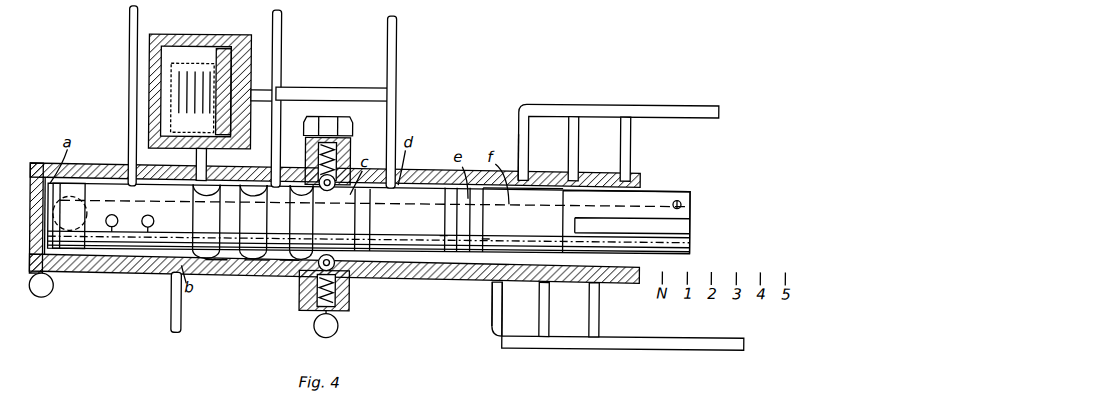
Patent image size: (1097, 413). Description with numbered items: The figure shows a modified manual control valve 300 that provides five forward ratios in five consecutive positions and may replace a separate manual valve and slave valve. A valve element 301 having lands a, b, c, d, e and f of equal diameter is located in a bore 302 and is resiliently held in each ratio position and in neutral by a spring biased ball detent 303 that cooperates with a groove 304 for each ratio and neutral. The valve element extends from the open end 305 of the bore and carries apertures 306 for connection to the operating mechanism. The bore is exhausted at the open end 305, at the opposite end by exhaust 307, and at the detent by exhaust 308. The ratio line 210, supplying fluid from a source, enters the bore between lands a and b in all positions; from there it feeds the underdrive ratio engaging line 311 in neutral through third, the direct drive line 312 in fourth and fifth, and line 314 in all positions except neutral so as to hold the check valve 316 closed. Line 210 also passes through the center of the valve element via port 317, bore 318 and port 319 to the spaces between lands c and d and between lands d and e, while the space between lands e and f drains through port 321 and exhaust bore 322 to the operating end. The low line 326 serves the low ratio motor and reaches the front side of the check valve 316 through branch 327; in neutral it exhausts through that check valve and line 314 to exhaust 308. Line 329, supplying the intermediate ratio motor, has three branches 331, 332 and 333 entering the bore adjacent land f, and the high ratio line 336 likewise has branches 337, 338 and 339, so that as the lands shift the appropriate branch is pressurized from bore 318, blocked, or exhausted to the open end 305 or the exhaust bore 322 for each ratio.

The modified control valve 300 is at (108, 165).
The valve element 301 is at (428, 210).
The bore 302 is at (290, 262).
The spring biased ball detent 303 is at (258, 258).
The groove 304 is at (215, 258).
The open end of the bore 305 is at (657, 172).
The apertures 306 is at (690, 199).
The exhaust 307 is at (42, 297).
The exhaust 308 is at (340, 323).
The underdrive ratio engaging line 311 is at (129, 90).
The line 312 is at (280, 33).
The line 314 is at (204, 155).
The check valve 316 is at (224, 19).
The port 317 is at (148, 227).
The bore 318 is at (112, 227).
The port 319 is at (443, 232).
The port 321 is at (486, 235).
The exhaust bore 322 is at (508, 190).
The low line 326 is at (390, 110).
The branch 327 is at (350, 95).
The line 329 is at (572, 333).
The branch 331 is at (494, 322).
The branch 332 is at (541, 286).
The branch 333 is at (596, 296).
The high ratio line 336 is at (590, 104).
The branch 337 is at (518, 126).
The branch 338 is at (569, 128).
The branch 339 is at (619, 132).
The ratio line 210 is at (172, 314).